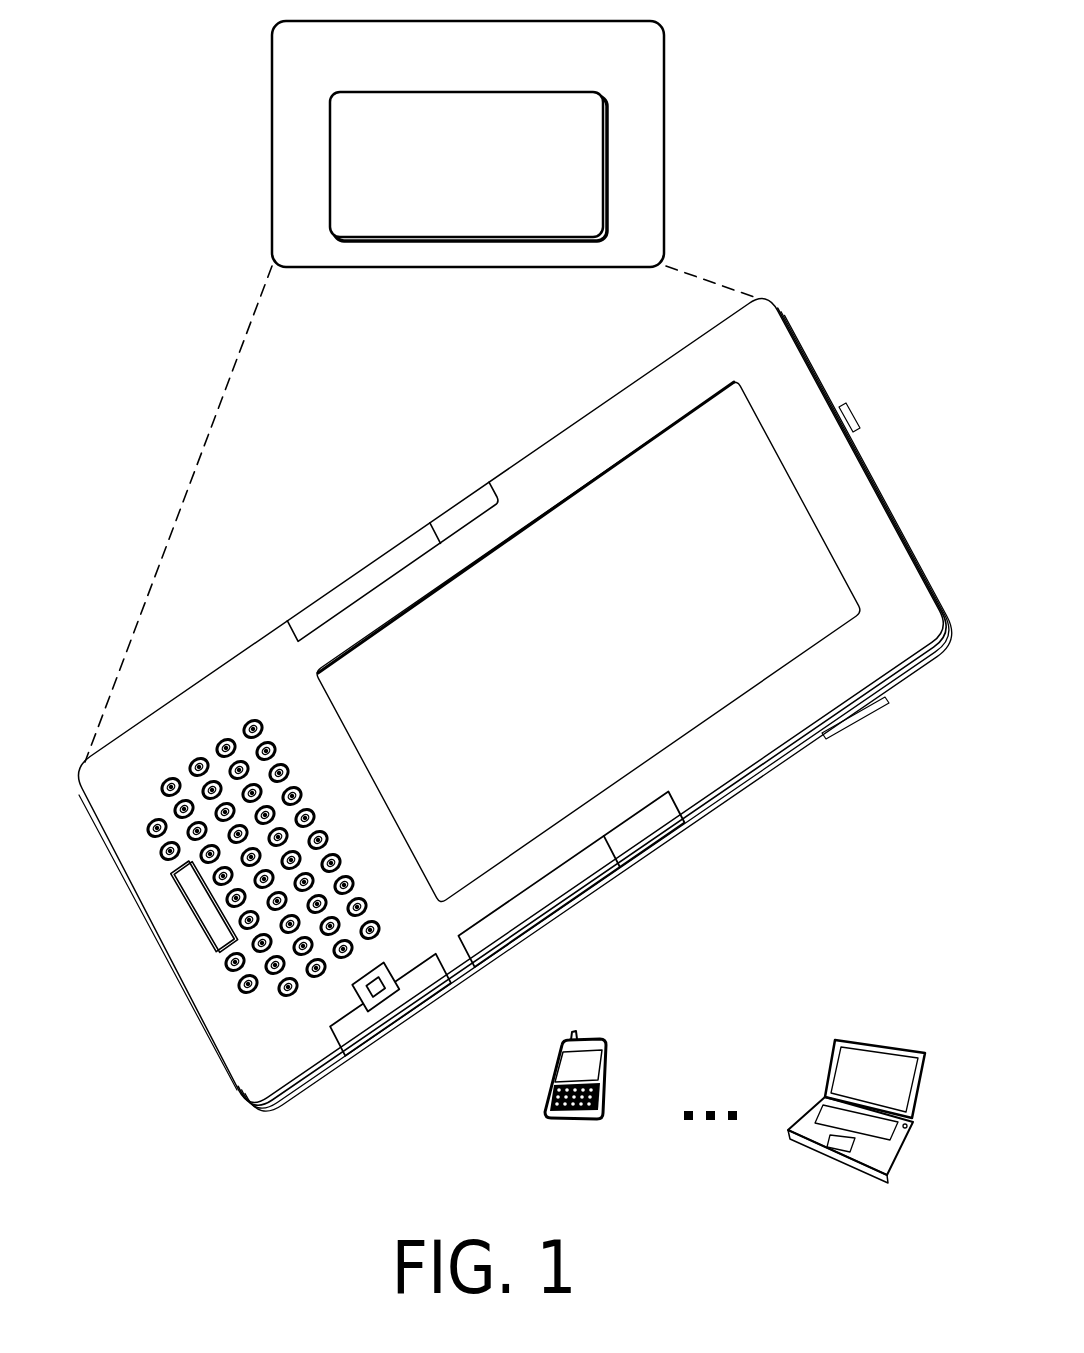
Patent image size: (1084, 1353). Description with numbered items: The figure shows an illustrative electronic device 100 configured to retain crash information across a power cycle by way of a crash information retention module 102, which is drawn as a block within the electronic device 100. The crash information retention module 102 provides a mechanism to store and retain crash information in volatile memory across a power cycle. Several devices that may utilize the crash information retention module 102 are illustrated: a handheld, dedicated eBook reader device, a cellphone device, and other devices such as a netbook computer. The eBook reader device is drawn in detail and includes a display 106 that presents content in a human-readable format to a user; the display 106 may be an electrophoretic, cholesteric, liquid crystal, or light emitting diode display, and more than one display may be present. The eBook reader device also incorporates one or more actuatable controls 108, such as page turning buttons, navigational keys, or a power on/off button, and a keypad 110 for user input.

The electronic device 100 is at (450, 83).
The crash information retention module 102 is at (450, 203).
The display 106 is at (737, 433).
The actuatable controls 108 is at (395, 554).
The keypad 110 is at (250, 983).